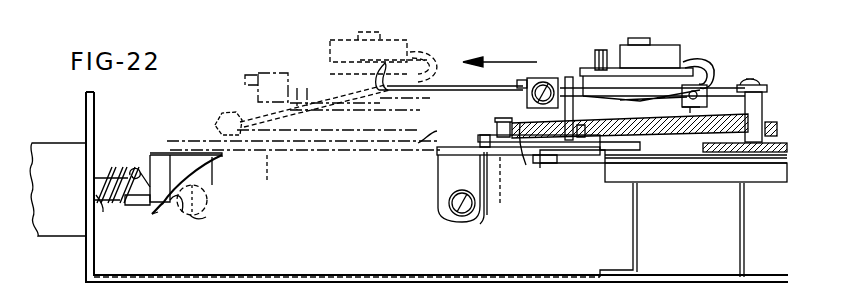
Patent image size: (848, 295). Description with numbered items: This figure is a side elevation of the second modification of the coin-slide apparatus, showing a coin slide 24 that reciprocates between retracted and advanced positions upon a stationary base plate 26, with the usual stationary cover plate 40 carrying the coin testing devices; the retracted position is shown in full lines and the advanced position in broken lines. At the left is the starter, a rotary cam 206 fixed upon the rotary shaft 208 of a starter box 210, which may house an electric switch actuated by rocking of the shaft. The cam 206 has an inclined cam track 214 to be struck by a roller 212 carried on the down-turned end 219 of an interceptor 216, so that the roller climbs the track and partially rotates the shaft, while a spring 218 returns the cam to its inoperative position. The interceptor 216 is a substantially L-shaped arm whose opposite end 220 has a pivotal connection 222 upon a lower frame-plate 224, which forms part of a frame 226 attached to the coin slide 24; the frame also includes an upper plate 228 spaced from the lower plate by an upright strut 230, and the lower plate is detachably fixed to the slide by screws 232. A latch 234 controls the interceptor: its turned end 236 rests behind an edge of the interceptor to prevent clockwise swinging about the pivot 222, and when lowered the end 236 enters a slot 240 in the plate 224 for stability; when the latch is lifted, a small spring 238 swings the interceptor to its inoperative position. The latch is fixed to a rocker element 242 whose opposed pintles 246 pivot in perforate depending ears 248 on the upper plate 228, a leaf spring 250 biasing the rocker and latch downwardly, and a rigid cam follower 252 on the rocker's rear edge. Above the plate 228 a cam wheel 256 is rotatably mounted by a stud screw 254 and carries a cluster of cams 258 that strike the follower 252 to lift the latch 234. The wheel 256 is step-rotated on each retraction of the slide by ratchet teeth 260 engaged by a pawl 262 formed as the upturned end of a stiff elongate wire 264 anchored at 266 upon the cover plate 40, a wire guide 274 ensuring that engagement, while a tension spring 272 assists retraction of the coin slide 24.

The coin slide 24 is at (791, 162).
The stationary base plate 26 is at (782, 170).
The stationary cover plate 40 is at (778, 149).
The rotary cam 206 is at (152, 205).
The rotary shaft 208 is at (116, 166).
The starter box 210 is at (53, 143).
The roller 212 is at (197, 217).
The inclined cam track 214 is at (181, 213).
The interceptor 216 is at (437, 146).
The spring 218 is at (103, 207).
The down-turned end 219 is at (212, 190).
The opposite end 220 is at (590, 145).
The pivotal connection 222 is at (459, 188).
The lower frame-plate 224 is at (541, 163).
The frame 226 is at (520, 79).
The upper plate 228 is at (563, 79).
The upright strut 230 is at (527, 100).
The screws 232 is at (550, 161).
The latch 234 is at (603, 68).
The turned end 236 is at (218, 122).
The small spring 238 is at (499, 140).
The slot 240 is at (503, 178).
The rocker element 242 is at (673, 131).
The pintles 246 is at (766, 95).
The depending ears 248 is at (692, 104).
The leaf spring 250 is at (620, 135).
The cam follower 252 is at (695, 62).
The stud screw 254 is at (646, 38).
The cam wheel 256 is at (318, 62).
The cams 258 is at (672, 68).
The ratchet teeth 260 is at (705, 88).
The pawl 262 is at (385, 64).
The stiff elongate wire 264 is at (457, 85).
The anchorage 266 is at (761, 85).
The tension spring 272 is at (769, 125).
The wire guide 274 is at (573, 88).